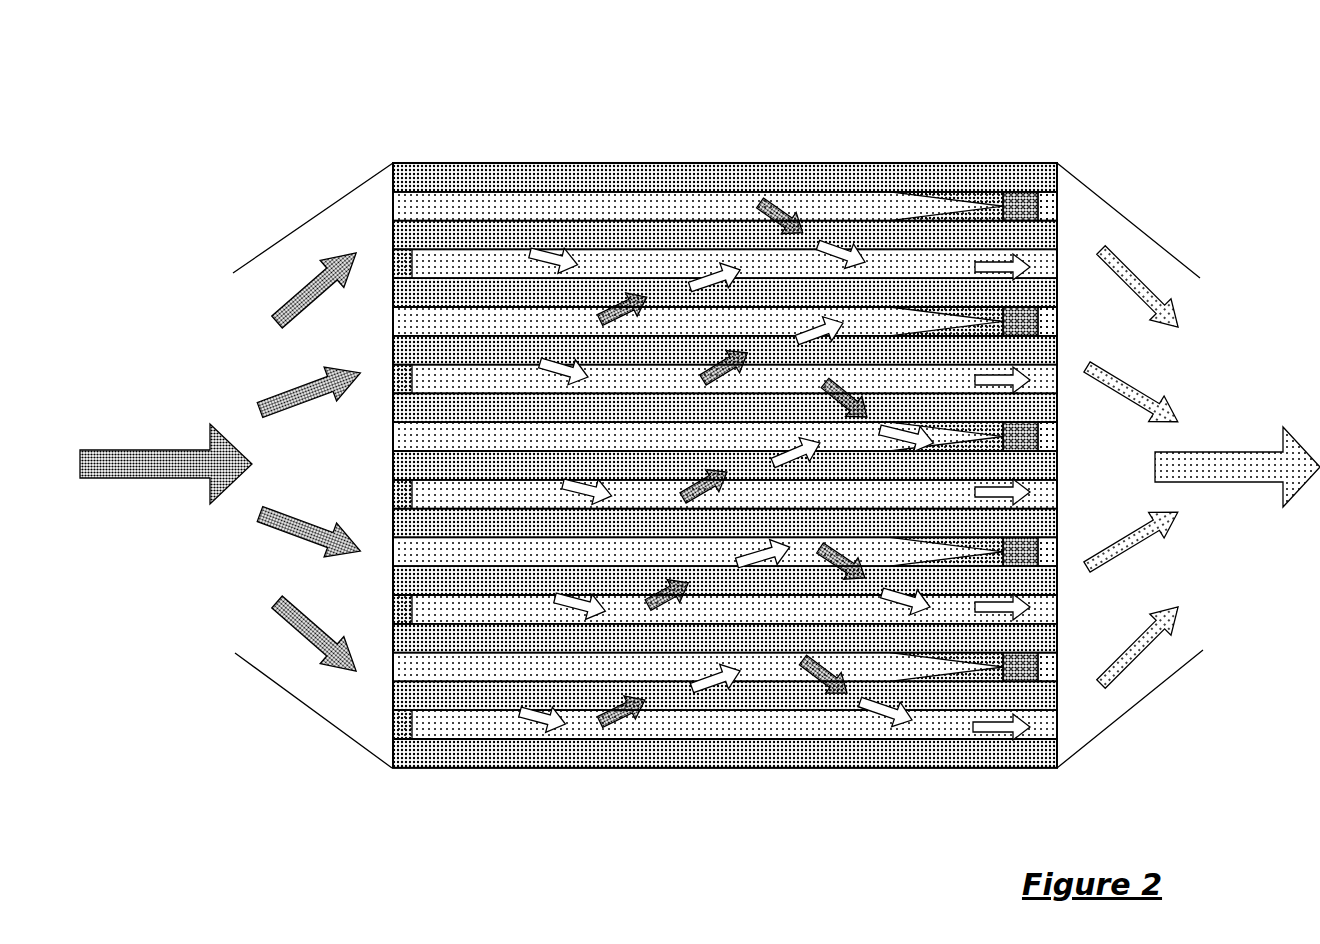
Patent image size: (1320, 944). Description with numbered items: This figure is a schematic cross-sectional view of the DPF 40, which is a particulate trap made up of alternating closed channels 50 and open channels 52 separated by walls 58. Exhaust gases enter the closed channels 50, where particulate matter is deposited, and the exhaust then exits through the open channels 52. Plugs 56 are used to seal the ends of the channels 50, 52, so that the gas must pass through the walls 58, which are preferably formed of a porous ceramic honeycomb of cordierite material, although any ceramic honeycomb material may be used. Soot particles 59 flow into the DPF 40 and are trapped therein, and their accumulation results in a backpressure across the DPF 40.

The DPF 40 is at (700, 440).
The closed channels 50 is at (892, 267).
The open channels 52 is at (812, 722).
The plugs 56 is at (1060, 313).
The walls 58 is at (703, 225).
The soot particles 59 is at (1022, 198).